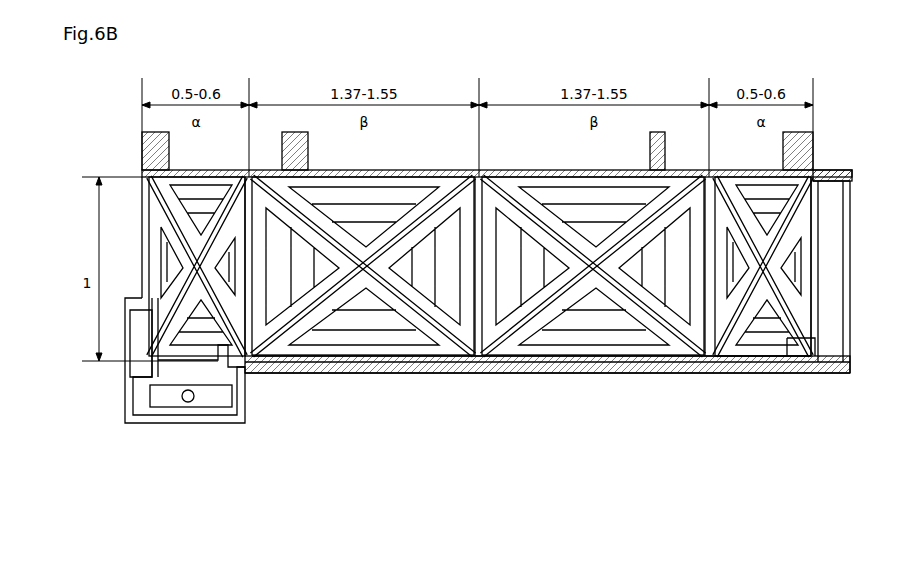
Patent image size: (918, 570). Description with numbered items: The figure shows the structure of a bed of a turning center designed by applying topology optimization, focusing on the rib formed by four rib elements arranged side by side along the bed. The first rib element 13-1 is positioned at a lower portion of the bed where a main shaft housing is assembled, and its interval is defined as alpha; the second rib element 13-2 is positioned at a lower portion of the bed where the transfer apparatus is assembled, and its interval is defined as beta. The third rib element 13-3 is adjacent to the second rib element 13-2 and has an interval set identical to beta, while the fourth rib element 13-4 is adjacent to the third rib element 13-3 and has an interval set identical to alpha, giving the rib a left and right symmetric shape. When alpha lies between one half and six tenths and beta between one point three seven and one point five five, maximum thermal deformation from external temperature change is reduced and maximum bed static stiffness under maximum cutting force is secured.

The first rib element 13-1 is at (257, 373).
The second rib element 13-2 is at (433, 330).
The third rib element 13-3 is at (655, 330).
The fourth rib element 13-4 is at (770, 333).